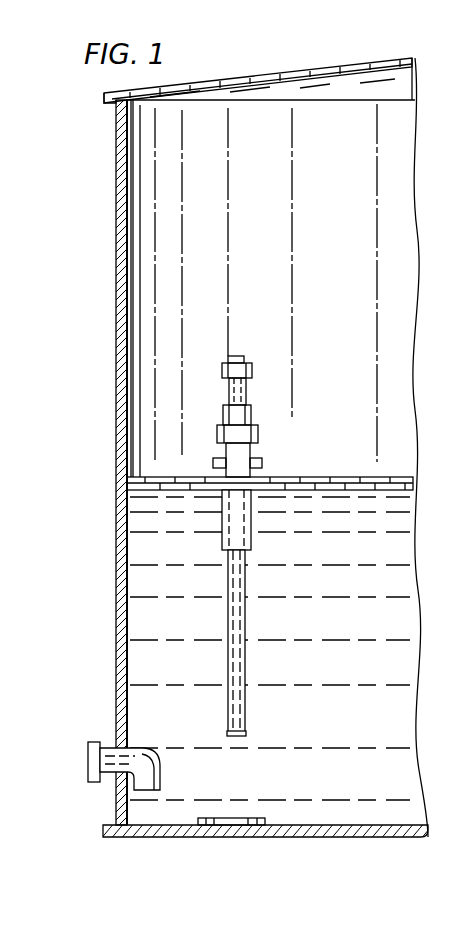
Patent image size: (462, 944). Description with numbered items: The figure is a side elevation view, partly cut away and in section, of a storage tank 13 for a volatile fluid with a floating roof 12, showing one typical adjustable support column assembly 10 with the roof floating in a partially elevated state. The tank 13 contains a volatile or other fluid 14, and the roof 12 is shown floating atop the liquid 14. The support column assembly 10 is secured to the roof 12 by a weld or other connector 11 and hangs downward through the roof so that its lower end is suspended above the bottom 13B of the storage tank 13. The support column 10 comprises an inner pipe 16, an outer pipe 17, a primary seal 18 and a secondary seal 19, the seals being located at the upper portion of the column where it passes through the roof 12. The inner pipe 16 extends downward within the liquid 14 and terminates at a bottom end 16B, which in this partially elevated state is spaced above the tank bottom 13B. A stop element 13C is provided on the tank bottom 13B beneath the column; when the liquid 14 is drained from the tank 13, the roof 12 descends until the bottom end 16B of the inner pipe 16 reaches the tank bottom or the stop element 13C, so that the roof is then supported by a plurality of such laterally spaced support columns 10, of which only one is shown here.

The support column assembly 10 is at (301, 331).
The connector 11 is at (265, 468).
The floating roof 12 is at (312, 477).
The storage tank 13 is at (127, 228).
The bottom 13B is at (352, 825).
The stop element 13C is at (246, 818).
The fluid 14 is at (155, 617).
The inner pipe 16 is at (246, 627).
The bottom end 16B is at (238, 737).
The outer pipe 17 is at (251, 548).
The primary seal 18 is at (254, 418).
The secondary seal 19 is at (252, 370).